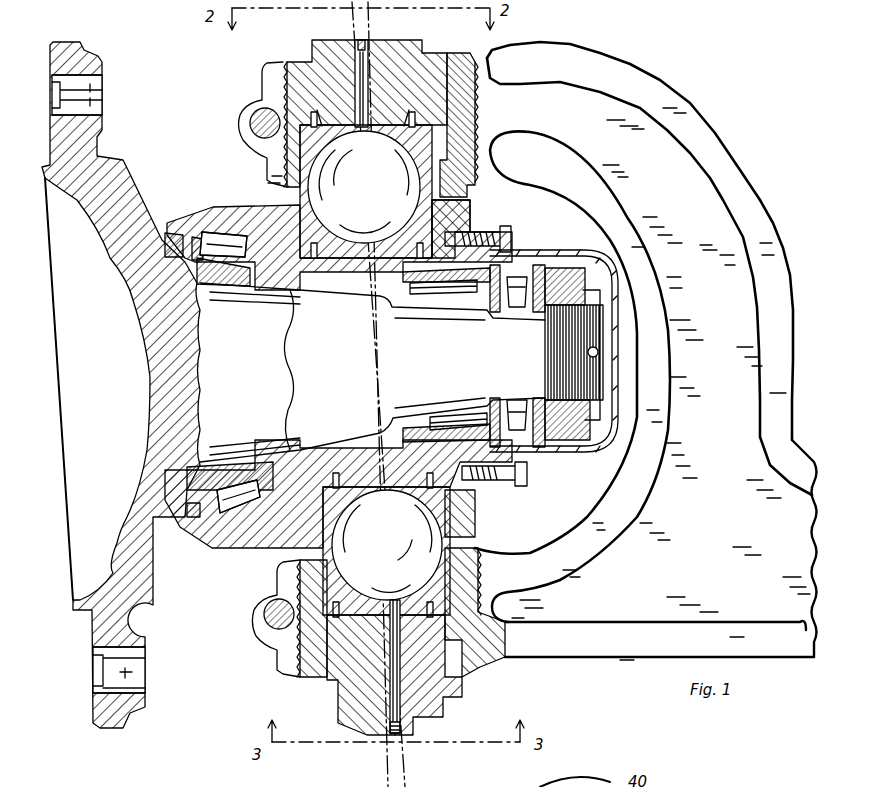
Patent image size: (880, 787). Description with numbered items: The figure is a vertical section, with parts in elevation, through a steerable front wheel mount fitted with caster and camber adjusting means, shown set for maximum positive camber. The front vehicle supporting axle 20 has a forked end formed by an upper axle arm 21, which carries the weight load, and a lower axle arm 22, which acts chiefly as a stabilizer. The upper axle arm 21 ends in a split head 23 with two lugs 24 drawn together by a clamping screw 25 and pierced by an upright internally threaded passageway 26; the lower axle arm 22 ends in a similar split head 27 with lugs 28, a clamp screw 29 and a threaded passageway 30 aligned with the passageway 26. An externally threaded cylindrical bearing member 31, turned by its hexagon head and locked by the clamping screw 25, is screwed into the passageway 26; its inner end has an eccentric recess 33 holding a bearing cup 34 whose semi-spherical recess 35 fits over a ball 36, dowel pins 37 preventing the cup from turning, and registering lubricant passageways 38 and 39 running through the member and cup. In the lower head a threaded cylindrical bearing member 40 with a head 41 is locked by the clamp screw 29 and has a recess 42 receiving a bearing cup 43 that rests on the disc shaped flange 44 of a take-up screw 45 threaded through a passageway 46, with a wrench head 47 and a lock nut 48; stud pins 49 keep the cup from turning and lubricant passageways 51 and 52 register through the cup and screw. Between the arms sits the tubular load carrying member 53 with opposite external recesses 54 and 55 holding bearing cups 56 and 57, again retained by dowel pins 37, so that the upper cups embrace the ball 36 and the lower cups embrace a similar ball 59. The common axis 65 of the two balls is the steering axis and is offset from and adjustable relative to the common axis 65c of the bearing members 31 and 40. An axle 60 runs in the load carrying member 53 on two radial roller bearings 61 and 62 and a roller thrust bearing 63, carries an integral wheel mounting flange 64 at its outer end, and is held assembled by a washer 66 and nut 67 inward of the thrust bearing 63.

The front vehicle supporting axle 20 is at (812, 660).
The upper axle arm 21 is at (628, 72).
The lower axle arm 22 is at (512, 667).
The split head 23 is at (455, 64).
The flanges or lugs 24 is at (248, 107).
The clamping screw 25 is at (250, 126).
The socket or passageway 26 is at (474, 78).
The split head 27 is at (483, 668).
The lugs 28 is at (277, 656).
The clamp screw 29 is at (266, 618).
The socket or passageway 30 is at (476, 647).
The cylindrical bearing member 31 is at (448, 16).
The cylindrical recess 33 is at (453, 168).
The bearing cup 34 is at (364, 187).
The semi-spherical recess 35 is at (284, 156).
The spherical bearing member or ball 36 is at (272, 173).
The dowel pins 37 is at (318, 128).
The lubricant passageway 38 is at (366, 62).
The lubricant passageway 39 is at (362, 140).
The cylindrical bearing member 40 is at (281, 674).
The head 41 is at (318, 676).
The cylindrical recess 42 is at (470, 585).
The bearing cup 43 is at (470, 570).
The disc shaped flange 44 is at (508, 611).
The bearing take-up screw 45 is at (340, 690).
The passageway 46 is at (458, 676).
The head 47 is at (414, 730).
The lock nut 48 is at (445, 708).
The stud pins 49 is at (385, 580).
The lubricant passageway 51 is at (375, 540).
The lubricant passageway 52 is at (372, 724).
The load carrying member 53 is at (294, 370).
The external cylindrical recess 54 is at (443, 213).
The external cylindrical recess 55 is at (318, 525).
The bearing cup 56 is at (450, 222).
The bearing cup 57 is at (462, 500).
The spherical bearing member or ball 59 is at (460, 515).
The axle 60 is at (372, 372).
The radial type roller bearing 61 is at (232, 462).
The radial type roller bearing 62 is at (434, 415).
The roller thrust bearing 63 is at (514, 398).
The wheel mounting flange 64 is at (147, 590).
The steering axis 65 is at (352, 20).
The common axis 65c is at (366, 762).
The washer 66 is at (575, 440).
The nut 67 is at (608, 446).